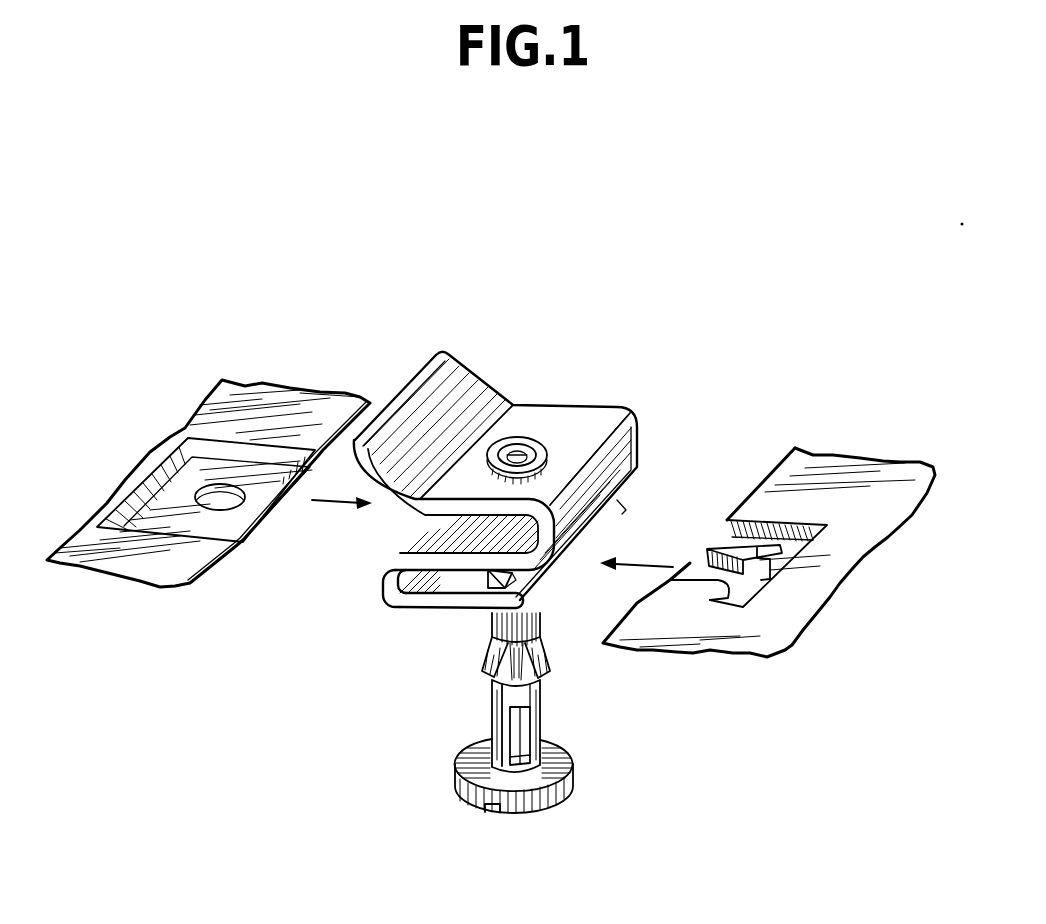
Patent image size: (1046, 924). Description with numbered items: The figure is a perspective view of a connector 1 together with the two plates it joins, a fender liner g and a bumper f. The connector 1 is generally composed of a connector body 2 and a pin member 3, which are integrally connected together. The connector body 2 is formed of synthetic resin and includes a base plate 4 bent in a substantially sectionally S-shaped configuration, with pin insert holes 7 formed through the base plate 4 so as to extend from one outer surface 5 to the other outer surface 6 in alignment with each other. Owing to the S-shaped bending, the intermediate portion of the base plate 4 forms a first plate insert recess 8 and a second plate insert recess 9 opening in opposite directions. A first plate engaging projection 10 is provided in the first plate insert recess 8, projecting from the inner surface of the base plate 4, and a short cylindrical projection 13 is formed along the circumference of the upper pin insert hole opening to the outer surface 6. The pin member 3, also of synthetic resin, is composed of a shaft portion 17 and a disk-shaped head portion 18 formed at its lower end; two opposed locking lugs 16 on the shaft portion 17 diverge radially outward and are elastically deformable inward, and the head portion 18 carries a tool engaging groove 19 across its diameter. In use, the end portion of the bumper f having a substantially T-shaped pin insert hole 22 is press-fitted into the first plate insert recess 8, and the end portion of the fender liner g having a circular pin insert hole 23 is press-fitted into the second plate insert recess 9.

The connector 1 is at (328, 681).
The connector body 2 is at (623, 384).
The pin member 3 is at (441, 722).
The base plate 4 is at (390, 581).
The one outer surface 5 is at (432, 610).
The other outer surface 6 is at (562, 417).
The pin insert hole 7 is at (512, 455).
The first plate insert recess 8 is at (430, 580).
The second plate insert recess 9 is at (478, 527).
The first plate engaging projection 10 is at (488, 583).
The short cylindrical projection 13 is at (547, 453).
The locking lug 16 is at (483, 668).
The shaft portion 17 is at (547, 731).
The head portion 18 is at (575, 787).
The tool engaging groove 19 is at (492, 812).
The pin insert hole 22 is at (700, 570).
The pin insert hole 23 is at (222, 493).
The fender liner g is at (284, 474).
The bumper f is at (767, 637).